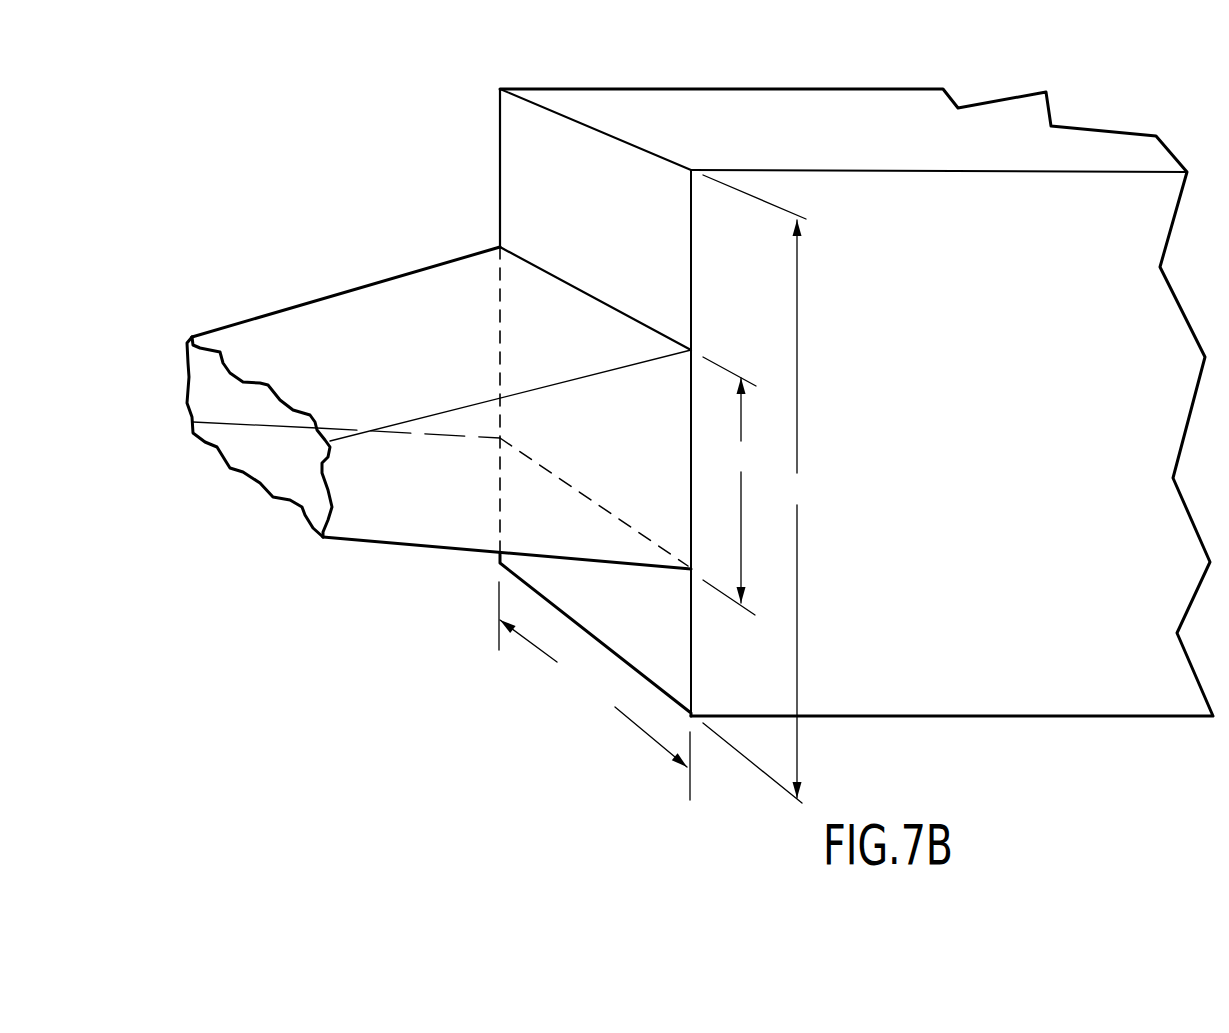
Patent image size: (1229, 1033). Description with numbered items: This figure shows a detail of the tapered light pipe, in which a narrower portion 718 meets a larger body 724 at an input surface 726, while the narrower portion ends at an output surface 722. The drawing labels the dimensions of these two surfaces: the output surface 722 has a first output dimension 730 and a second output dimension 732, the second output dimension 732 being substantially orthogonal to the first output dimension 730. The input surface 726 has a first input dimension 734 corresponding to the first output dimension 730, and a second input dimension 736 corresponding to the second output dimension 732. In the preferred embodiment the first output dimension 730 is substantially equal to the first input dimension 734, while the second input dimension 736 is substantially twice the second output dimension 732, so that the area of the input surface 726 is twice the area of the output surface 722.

The tapered light pipe (broken away) 718 is at (439, 408).
The output surface 722 is at (518, 286).
The block / integrator body 724 is at (856, 402).
The input surface 726 is at (625, 165).
The first output dimension 730 is at (552, 637).
The second output dimension 732 is at (732, 486).
The first input dimension 734 is at (627, 744).
The second input dimension 736 is at (759, 489).